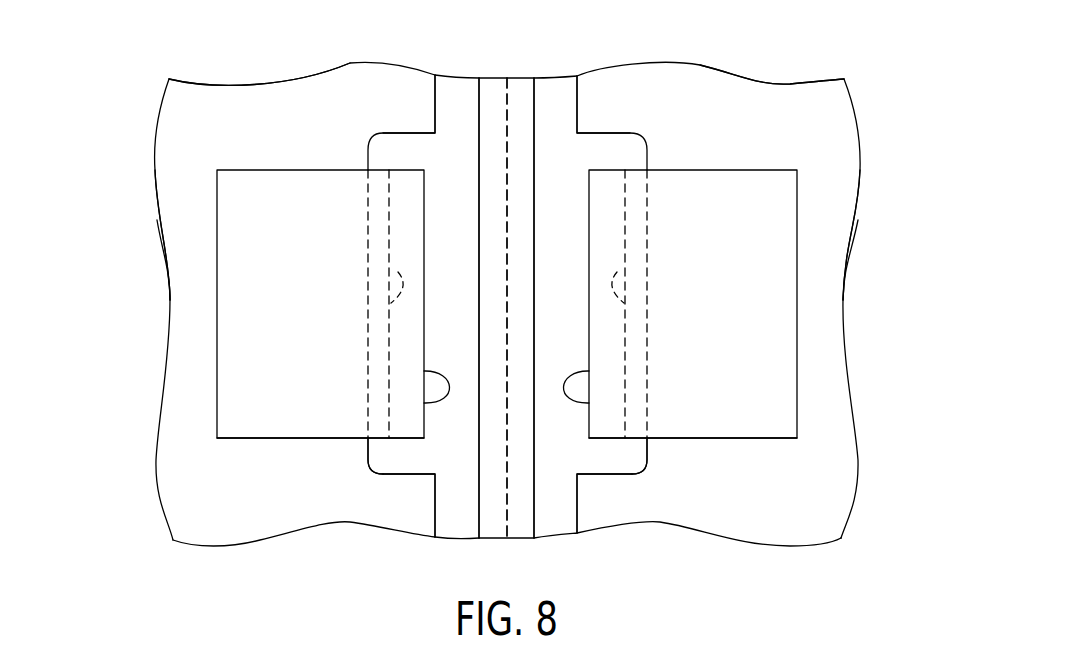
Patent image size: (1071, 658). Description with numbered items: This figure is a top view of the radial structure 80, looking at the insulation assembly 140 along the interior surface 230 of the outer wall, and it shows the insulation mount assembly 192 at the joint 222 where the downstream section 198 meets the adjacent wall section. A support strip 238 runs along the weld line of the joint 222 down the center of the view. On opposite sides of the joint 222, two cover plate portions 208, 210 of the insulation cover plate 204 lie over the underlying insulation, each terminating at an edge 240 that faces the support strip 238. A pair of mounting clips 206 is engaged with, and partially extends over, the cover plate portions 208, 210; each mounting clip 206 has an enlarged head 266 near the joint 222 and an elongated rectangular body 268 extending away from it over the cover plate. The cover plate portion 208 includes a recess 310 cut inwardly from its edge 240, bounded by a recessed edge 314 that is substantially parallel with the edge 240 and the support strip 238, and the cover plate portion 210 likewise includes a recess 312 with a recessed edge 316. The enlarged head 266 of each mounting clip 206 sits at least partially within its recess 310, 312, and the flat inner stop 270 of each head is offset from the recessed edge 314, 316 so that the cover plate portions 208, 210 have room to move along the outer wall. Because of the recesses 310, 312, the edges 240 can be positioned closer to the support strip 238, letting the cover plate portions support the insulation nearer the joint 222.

The radial structure 80 is at (874, 448).
The insulation assembly 140 is at (876, 127).
The insulation mount assembly 192 is at (806, 66).
The downstream section 198 is at (209, 68).
The insulation cover plate 204 is at (144, 207).
The mounting clip 206 is at (261, 159).
The cover plate portion 208 is at (186, 230).
The cover plate portion 210 is at (827, 230).
The joint 222 is at (507, 76).
The interior surface 230 is at (556, 88).
The support strip 238 is at (479, 77).
The edge 240 is at (435, 101).
The enlarged head 266 is at (424, 371).
The elongated rectangular body 268 is at (321, 438).
The flat inner stop 270 is at (398, 272).
The recess 310 is at (368, 466).
The recess 312 is at (647, 466).
The recessed edge 314 is at (368, 150).
The recessed edge 316 is at (647, 150).